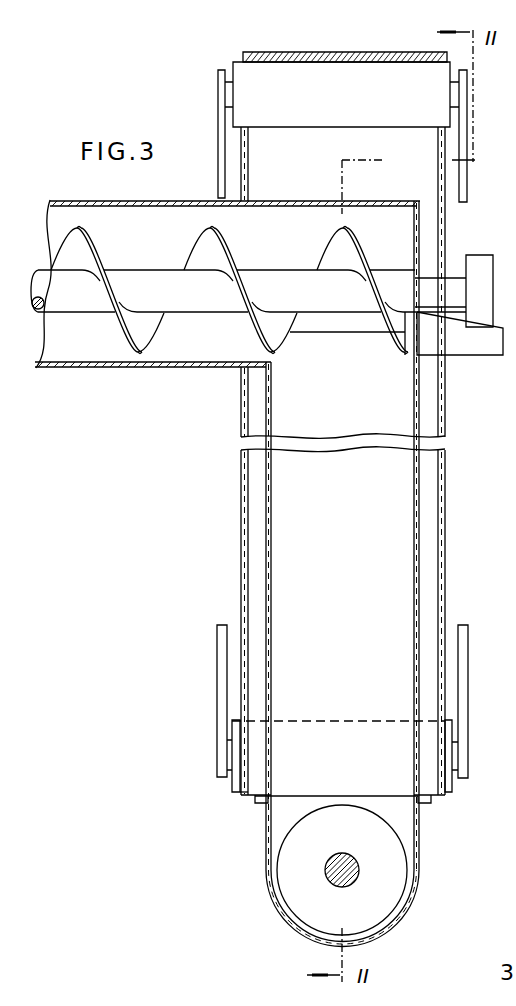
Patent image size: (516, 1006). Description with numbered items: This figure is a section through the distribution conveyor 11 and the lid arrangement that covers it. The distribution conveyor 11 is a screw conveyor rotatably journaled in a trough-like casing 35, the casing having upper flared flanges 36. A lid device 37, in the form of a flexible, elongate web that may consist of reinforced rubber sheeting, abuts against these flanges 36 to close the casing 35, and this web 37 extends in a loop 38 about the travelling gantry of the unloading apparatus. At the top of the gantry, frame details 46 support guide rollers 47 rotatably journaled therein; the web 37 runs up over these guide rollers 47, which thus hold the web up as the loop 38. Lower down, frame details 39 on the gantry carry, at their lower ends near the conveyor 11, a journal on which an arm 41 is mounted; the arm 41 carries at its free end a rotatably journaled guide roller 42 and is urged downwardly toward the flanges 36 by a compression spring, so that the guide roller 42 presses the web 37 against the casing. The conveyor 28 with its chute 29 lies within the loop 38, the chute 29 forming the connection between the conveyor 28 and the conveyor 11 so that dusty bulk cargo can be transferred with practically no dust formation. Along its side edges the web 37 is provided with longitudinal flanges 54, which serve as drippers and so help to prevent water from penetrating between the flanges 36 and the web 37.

The distribution conveyor 11 is at (410, 880).
The conveyor 28 is at (143, 340).
The chute 29 is at (373, 773).
The trough-like casing 35 is at (418, 857).
The upper flared flanges 36 is at (428, 802).
The lid device 37 is at (427, 223).
The loop 38 is at (332, 51).
The frame details 39 is at (217, 715).
The arm 41 is at (230, 770).
The guide roller 42 is at (241, 794).
The frame details 46 is at (220, 107).
The guide rollers 47 is at (309, 107).
The longitudinal flanges 54 is at (260, 797).